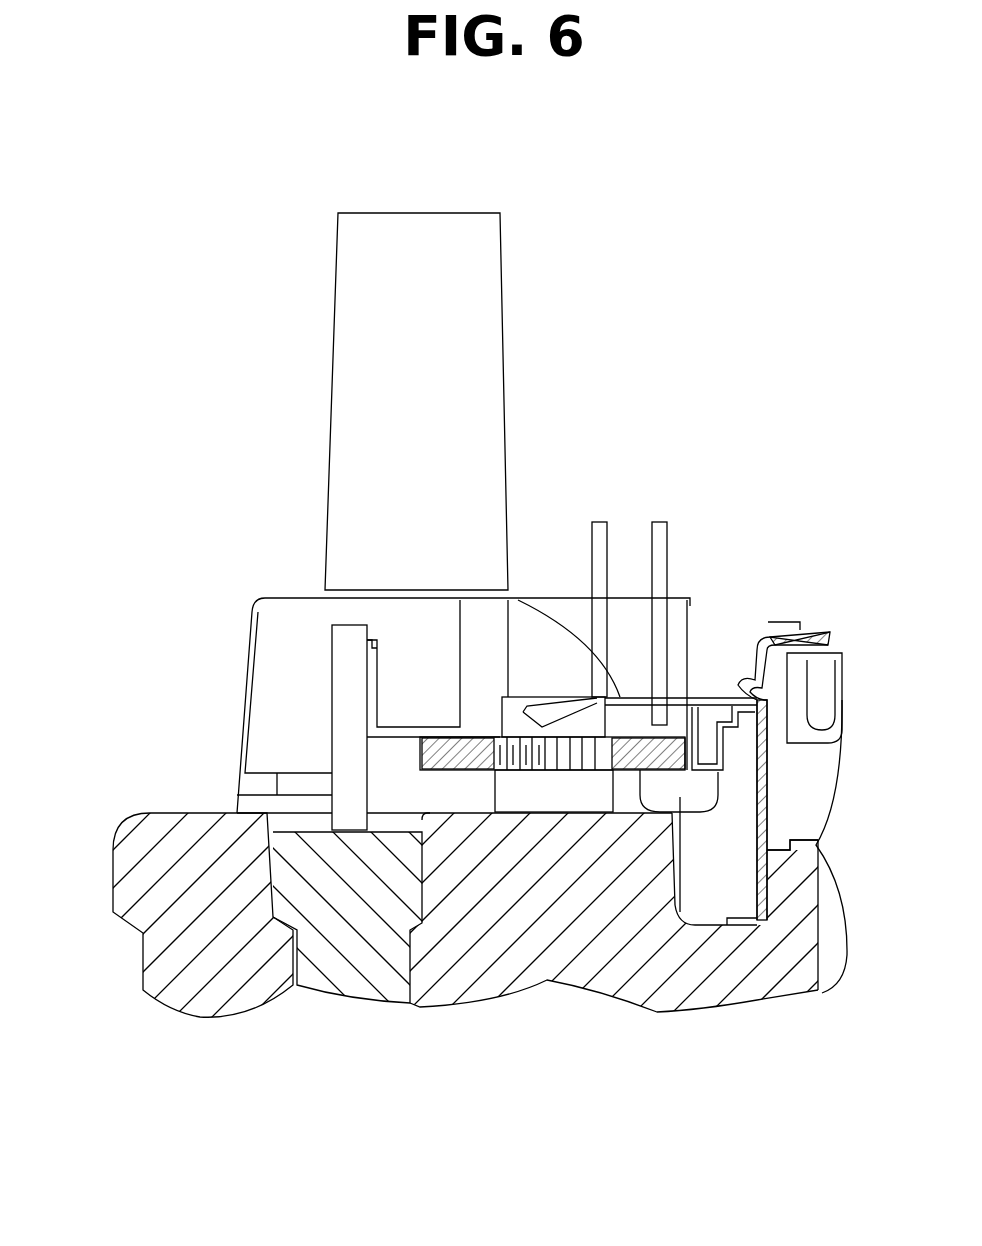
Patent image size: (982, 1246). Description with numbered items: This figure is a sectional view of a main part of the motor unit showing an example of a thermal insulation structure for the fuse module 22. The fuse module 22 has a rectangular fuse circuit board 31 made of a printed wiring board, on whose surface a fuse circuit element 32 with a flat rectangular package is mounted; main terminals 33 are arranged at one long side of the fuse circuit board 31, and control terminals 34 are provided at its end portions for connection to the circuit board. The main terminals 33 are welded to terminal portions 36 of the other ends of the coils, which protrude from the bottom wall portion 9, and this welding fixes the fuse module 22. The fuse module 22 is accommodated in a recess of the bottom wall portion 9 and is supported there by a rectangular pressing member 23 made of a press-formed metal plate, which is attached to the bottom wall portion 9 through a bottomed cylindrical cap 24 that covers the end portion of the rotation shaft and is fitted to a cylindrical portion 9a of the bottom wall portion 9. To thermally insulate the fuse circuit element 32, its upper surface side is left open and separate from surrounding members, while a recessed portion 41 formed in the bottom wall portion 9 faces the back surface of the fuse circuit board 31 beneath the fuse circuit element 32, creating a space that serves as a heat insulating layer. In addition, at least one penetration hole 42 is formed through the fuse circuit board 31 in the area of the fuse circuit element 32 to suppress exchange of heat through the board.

The bottom wall portion 9 is at (183, 860).
The cylindrical portion 9a is at (797, 928).
The fuse module 22 is at (548, 688).
The pressing member 23 is at (710, 690).
The cap 24 is at (818, 628).
The fuse circuit board 31 is at (458, 740).
The fuse circuit element 32 is at (535, 712).
The main terminal 33 is at (372, 643).
The control terminal 34 is at (660, 522).
The terminal portion 36 is at (345, 683).
The recessed portion 41 is at (565, 800).
The penetration hole 42 is at (500, 760).